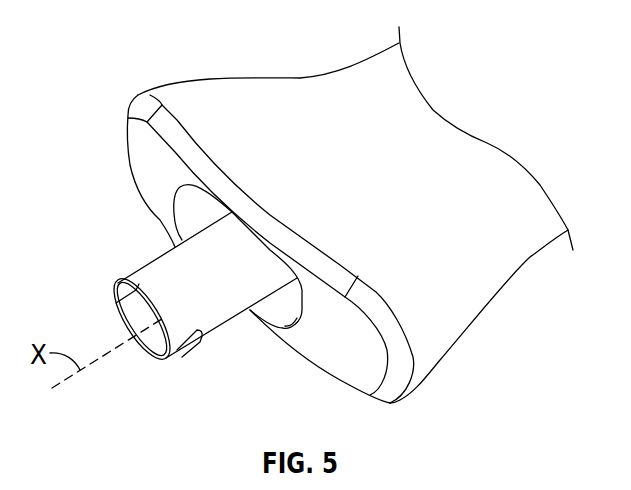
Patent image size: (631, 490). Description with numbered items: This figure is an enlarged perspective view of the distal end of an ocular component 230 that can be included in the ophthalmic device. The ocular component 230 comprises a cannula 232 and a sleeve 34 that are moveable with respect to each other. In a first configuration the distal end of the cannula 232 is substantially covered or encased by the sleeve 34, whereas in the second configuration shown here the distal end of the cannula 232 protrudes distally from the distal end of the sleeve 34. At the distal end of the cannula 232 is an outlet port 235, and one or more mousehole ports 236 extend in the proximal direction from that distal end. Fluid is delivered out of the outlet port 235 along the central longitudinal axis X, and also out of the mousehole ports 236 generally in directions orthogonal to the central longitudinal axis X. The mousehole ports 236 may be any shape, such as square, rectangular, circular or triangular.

The ocular component 230 is at (189, 42).
The sleeve 34 is at (507, 280).
The cannula 232 is at (225, 307).
The outlet port 235 is at (146, 347).
The mousehole port 236 is at (183, 345).